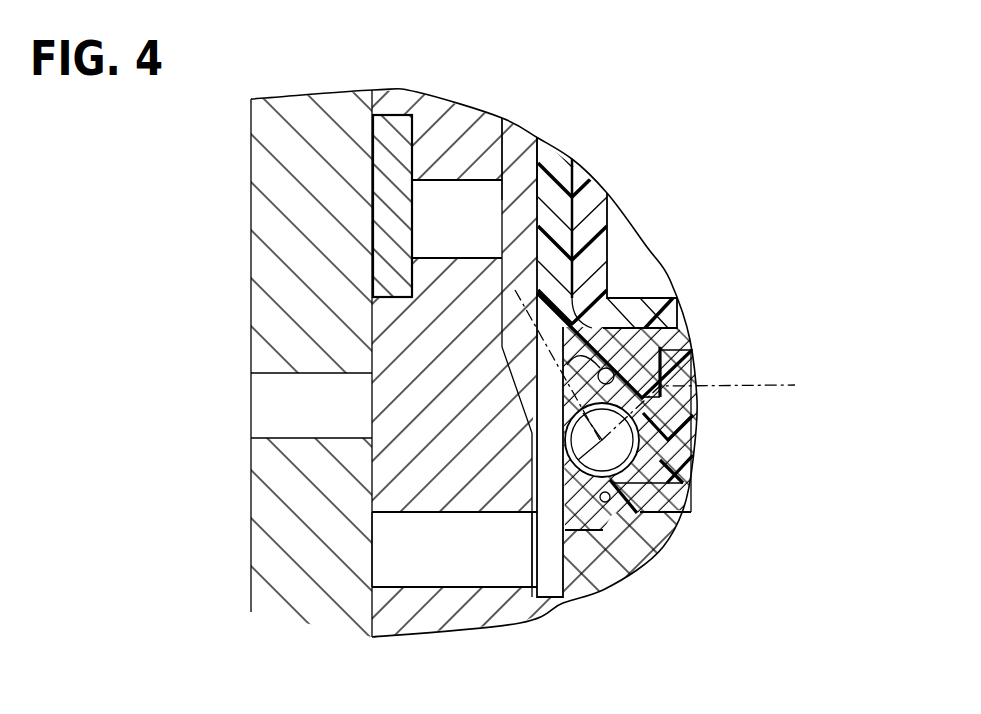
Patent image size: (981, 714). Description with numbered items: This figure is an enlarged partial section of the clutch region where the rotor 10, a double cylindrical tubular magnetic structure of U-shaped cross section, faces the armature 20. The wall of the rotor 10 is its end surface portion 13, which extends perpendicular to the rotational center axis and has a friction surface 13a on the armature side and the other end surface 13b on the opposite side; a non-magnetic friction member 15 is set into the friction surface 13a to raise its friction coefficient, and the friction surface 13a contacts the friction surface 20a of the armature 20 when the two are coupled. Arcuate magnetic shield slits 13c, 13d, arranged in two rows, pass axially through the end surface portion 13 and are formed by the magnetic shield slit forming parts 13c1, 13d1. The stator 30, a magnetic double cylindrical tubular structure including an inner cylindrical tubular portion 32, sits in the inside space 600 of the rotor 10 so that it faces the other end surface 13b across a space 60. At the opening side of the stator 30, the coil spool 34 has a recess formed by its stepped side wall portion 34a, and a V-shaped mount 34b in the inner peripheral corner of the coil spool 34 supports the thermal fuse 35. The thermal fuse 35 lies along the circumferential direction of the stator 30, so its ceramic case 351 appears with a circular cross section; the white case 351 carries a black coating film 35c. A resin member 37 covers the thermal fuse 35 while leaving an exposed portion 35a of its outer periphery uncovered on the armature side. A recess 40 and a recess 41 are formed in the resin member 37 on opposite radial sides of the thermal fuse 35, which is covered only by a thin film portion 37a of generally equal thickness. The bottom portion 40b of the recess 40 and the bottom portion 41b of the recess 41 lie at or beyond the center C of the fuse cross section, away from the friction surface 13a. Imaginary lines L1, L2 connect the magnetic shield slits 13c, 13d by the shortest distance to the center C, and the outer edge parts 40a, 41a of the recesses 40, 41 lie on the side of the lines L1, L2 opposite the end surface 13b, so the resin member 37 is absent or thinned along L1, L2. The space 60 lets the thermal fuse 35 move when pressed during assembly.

The rotor 10 is at (422, 110).
The end surface portion 13 is at (415, 500).
The friction surface 13a is at (362, 93).
The other end surface 13b is at (519, 165).
The magnetic shield slit 13c is at (410, 565).
The magnetic shield slit forming part 13c1 is at (495, 520).
The magnetic shield slit 13d is at (474, 205).
The magnetic shield slit forming part 13d1 is at (540, 165).
The friction member 15 is at (387, 224).
The armature 20 is at (293, 150).
The friction surface 20a is at (384, 140).
The stator 30 is at (633, 565).
The inner cylindrical tubular portion 32 is at (602, 572).
The coil spool 34 is at (588, 188).
The side wall portion 34a is at (593, 239).
The mount 34b is at (647, 420).
The thermal fuse 35 is at (638, 433).
The exposed portion 35a is at (567, 442).
The coating film 35c is at (648, 461).
The case 351 is at (620, 432).
The resin member 37 is at (608, 293).
The thin film portion 37a is at (614, 376).
The recess 40 is at (662, 352).
The outer edge part 40a is at (645, 322).
The bottom portion 40b is at (645, 368).
The recess 41 is at (615, 514).
The outer edge part 41a is at (600, 532).
The lower lip outer portion 41b is at (642, 507).
The space 60 is at (580, 196).
The inside space 600 is at (530, 208).
The center C is at (709, 405).
The imaginary line L1 is at (515, 298).
The imaginary line L2 is at (555, 478).